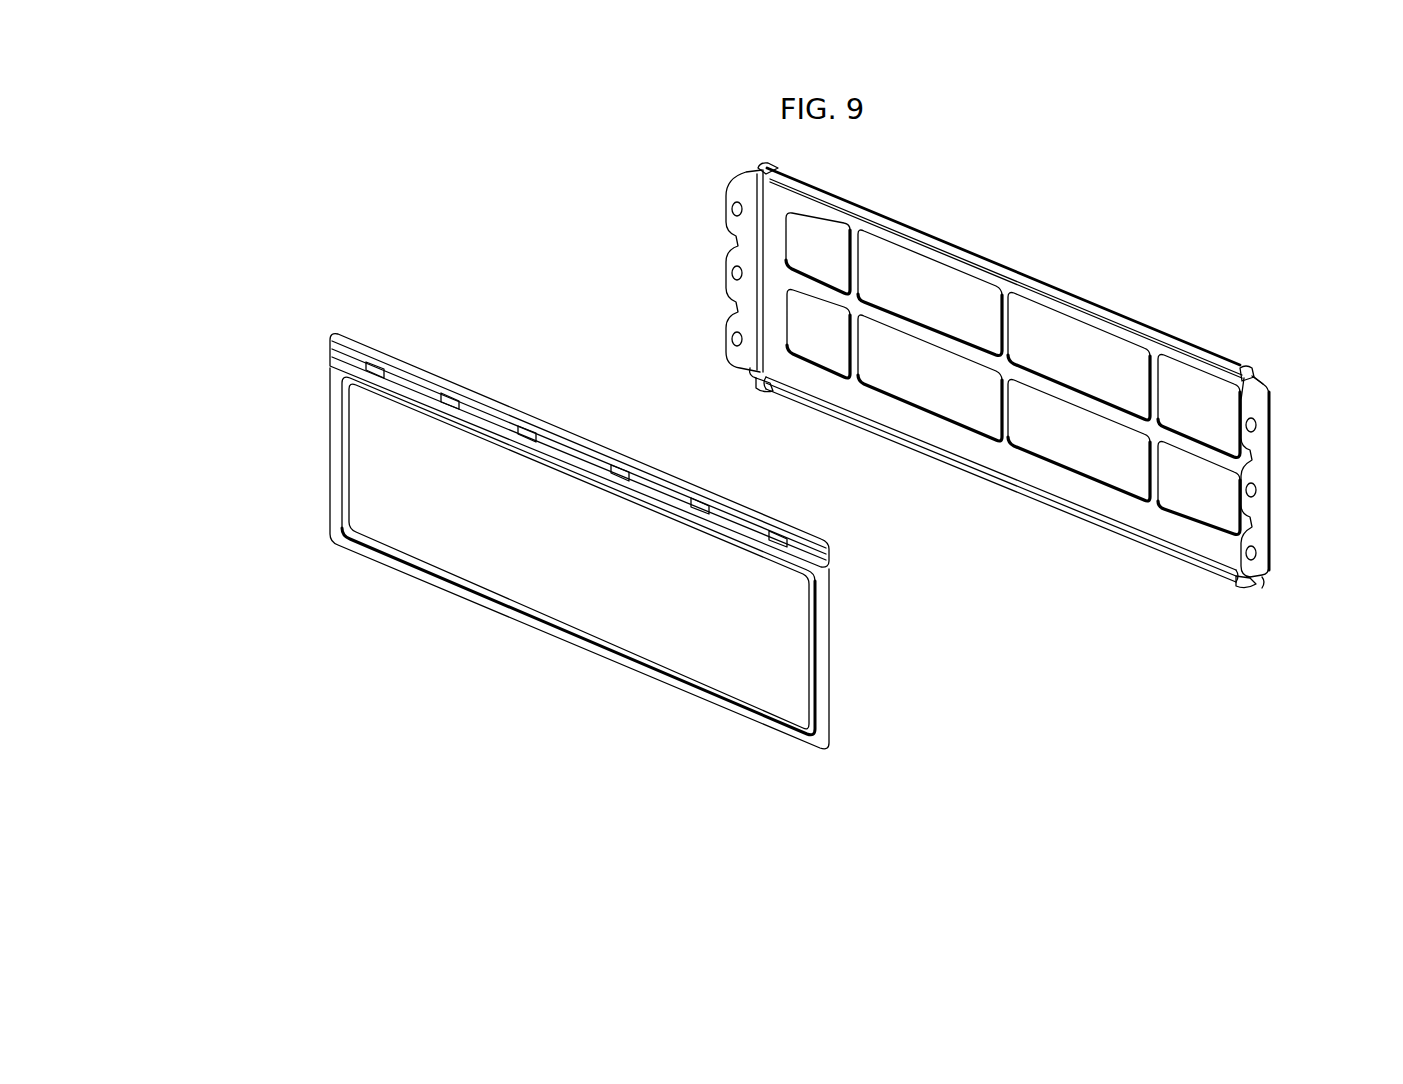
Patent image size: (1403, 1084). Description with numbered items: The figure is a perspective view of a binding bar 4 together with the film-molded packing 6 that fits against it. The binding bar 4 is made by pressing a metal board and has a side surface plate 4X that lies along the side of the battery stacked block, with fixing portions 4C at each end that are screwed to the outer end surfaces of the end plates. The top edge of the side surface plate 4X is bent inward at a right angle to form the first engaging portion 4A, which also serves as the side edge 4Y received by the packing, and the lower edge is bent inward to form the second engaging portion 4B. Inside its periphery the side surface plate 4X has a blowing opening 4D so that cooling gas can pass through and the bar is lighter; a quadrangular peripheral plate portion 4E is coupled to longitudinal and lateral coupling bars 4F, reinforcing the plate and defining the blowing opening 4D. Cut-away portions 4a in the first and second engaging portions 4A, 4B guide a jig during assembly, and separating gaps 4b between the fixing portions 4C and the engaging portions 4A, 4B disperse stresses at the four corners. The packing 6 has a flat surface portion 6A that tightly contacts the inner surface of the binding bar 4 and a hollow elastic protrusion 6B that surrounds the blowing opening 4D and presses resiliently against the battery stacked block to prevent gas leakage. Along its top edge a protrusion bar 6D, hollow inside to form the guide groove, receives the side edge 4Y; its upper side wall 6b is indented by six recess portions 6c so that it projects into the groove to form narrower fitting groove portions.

The binding bar 4 is at (1090, 248).
The cut-away portions 4a is at (760, 185).
The separating gaps 4b is at (752, 372).
The first engaging portion 4A is at (963, 253).
The side edge 4Y is at (930, 309).
The second engaging portion 4B is at (1078, 508).
The fixing portions 4C is at (728, 285).
The blowing opening 4D is at (898, 265).
The peripheral plate portion 4E is at (777, 297).
The coupling bars 4F is at (955, 347).
The side surface plate 4X is at (1030, 552).
The cover member 6 is at (471, 290).
The flat surface portion 6A is at (336, 418).
The elastic protrusion 6B is at (343, 474).
The upper side wall 6b is at (645, 508).
The recess portions 6c is at (376, 360).
The protrusion bar 6D is at (572, 478).